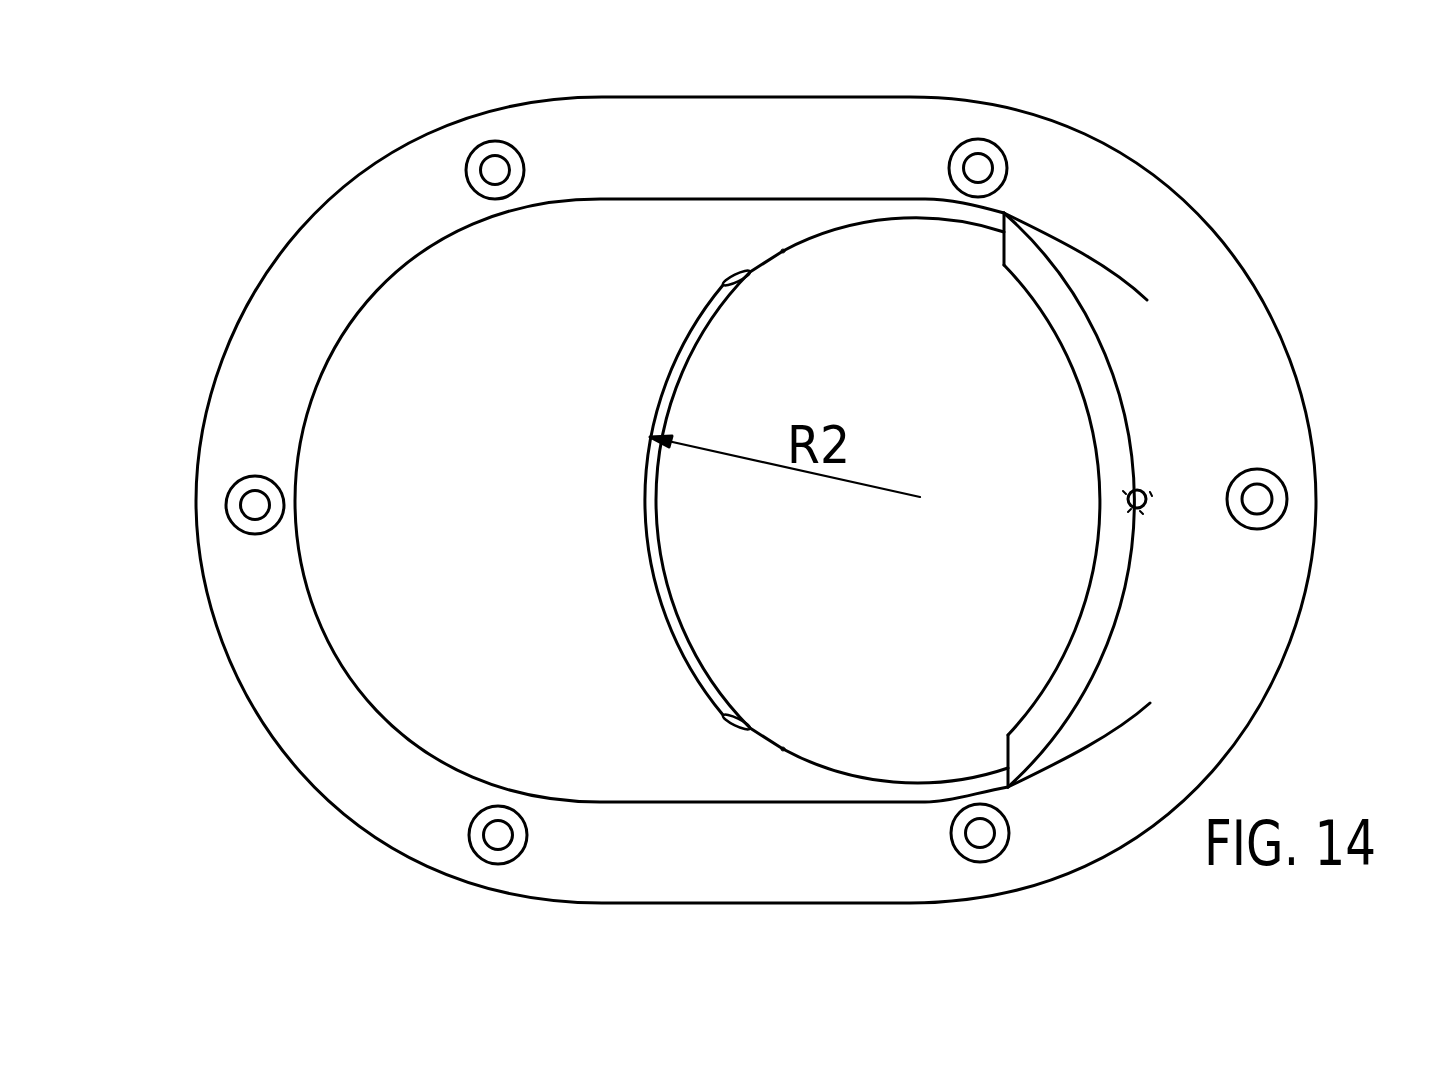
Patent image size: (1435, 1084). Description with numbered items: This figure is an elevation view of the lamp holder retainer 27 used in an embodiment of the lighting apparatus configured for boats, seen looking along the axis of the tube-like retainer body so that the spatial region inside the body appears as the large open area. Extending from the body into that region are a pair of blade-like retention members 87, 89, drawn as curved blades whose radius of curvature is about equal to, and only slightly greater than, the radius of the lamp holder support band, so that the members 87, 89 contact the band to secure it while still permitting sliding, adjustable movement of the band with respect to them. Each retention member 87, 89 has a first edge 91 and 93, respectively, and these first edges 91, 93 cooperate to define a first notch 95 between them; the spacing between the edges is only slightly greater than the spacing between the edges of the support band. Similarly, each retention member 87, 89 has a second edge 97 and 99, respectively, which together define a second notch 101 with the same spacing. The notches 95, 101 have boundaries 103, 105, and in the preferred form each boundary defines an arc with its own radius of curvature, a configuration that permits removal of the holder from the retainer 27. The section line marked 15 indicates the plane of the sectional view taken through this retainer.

The lamp holder retainer 27 is at (292, 240).
The retention member 87 is at (667, 372).
The retention member 89 is at (1103, 366).
The first edge 91 is at (737, 271).
The first edge 93 is at (1003, 257).
The first notch 95 is at (858, 216).
The second edge 97 is at (737, 729).
The second edge 99 is at (1008, 738).
The second notch 101 is at (849, 782).
The notch boundary 103 is at (783, 252).
The notch boundary 105 is at (790, 758).
The section line 15- 15 is at (92, 507).